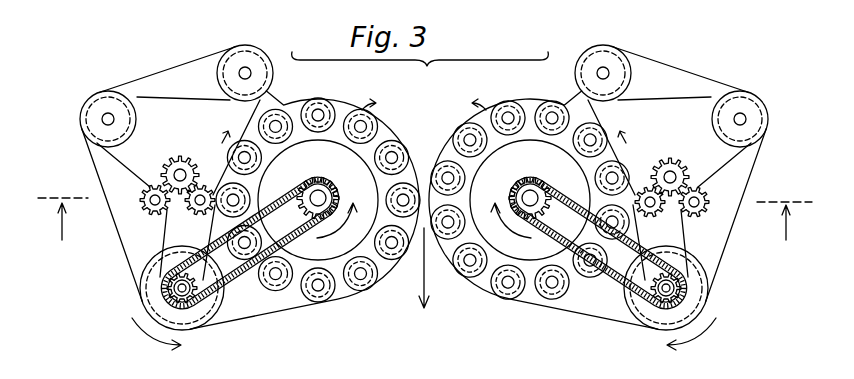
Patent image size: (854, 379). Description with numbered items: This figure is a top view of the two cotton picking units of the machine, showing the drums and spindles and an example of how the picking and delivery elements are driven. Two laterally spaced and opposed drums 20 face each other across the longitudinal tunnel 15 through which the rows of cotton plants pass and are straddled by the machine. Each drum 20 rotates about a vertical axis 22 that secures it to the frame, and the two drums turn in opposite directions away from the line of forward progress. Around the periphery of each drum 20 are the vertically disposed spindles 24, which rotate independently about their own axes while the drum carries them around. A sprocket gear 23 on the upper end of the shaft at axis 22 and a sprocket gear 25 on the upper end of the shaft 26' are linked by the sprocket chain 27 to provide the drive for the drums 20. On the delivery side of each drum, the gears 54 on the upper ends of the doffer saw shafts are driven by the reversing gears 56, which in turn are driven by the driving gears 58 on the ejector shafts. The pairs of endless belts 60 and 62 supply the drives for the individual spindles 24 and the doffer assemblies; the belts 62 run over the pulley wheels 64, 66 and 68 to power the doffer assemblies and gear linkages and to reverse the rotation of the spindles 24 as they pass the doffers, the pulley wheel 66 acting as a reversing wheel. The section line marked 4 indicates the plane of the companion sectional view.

The section line 4- 4 is at (425, 231).
The longitudinal tunnel 15 is at (415, 272).
The drums 20 is at (275, 211).
The vertical axes 22 is at (322, 198).
The sprocket gear 23 is at (320, 178).
The spindles 24 is at (366, 303).
The sprocket gear 25 is at (172, 290).
The shaft 26' is at (424, 320).
The sprocket chain 27 is at (283, 190).
The gears 54 is at (207, 186).
The reversing gears 56 is at (190, 160).
The driving gears 58 is at (146, 203).
The endless belts 60 is at (167, 98).
The endless belts 62 is at (250, 119).
The pulley wheel 64 is at (84, 110).
The pulley wheel 66 is at (261, 72).
The pulley wheel 68 is at (216, 299).